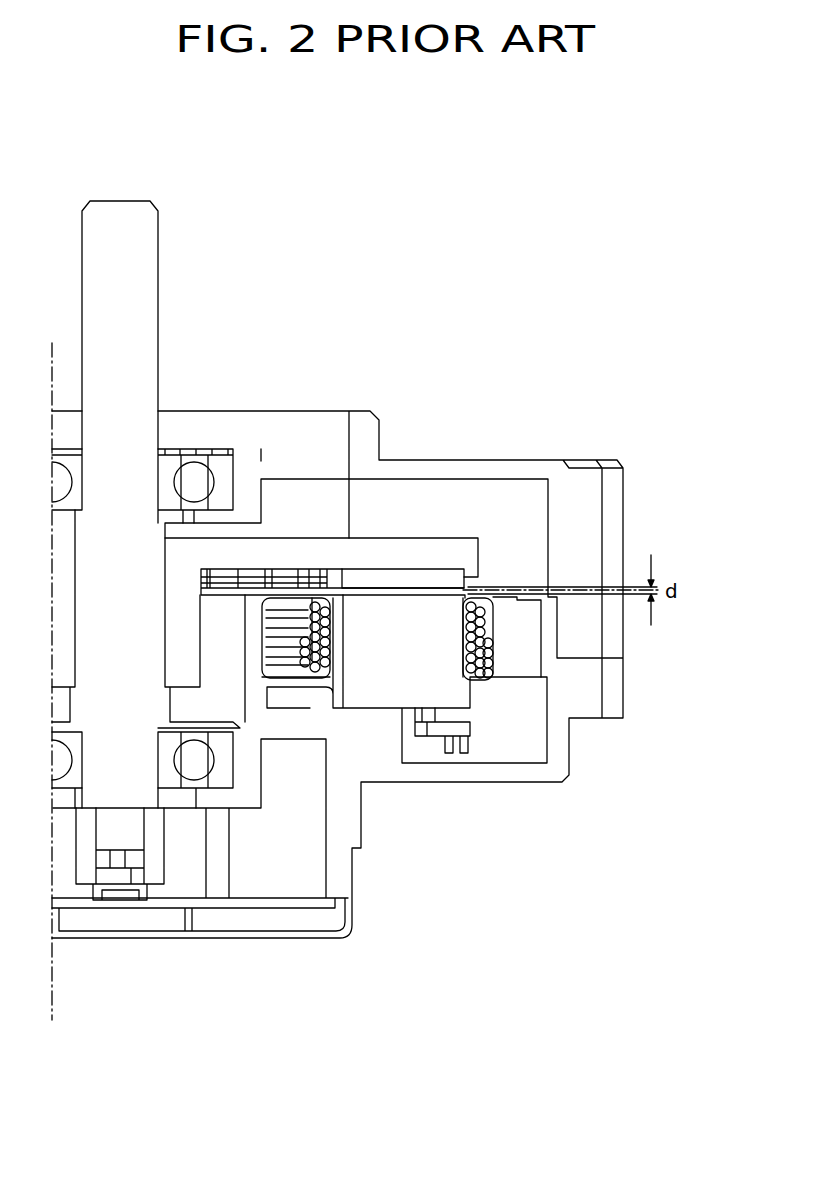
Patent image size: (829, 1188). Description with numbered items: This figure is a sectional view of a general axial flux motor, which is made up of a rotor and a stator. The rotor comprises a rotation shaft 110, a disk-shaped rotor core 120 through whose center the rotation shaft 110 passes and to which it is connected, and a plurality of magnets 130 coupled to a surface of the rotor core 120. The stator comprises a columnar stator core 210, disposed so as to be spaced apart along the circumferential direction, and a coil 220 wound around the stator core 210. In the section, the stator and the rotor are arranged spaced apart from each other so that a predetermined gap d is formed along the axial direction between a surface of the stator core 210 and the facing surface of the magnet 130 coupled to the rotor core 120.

The rotation shaft 110 is at (117, 210).
The rotor core 120 is at (411, 555).
The magnet 130 is at (443, 582).
The stator core 210 is at (373, 683).
The coil 220 is at (492, 657).